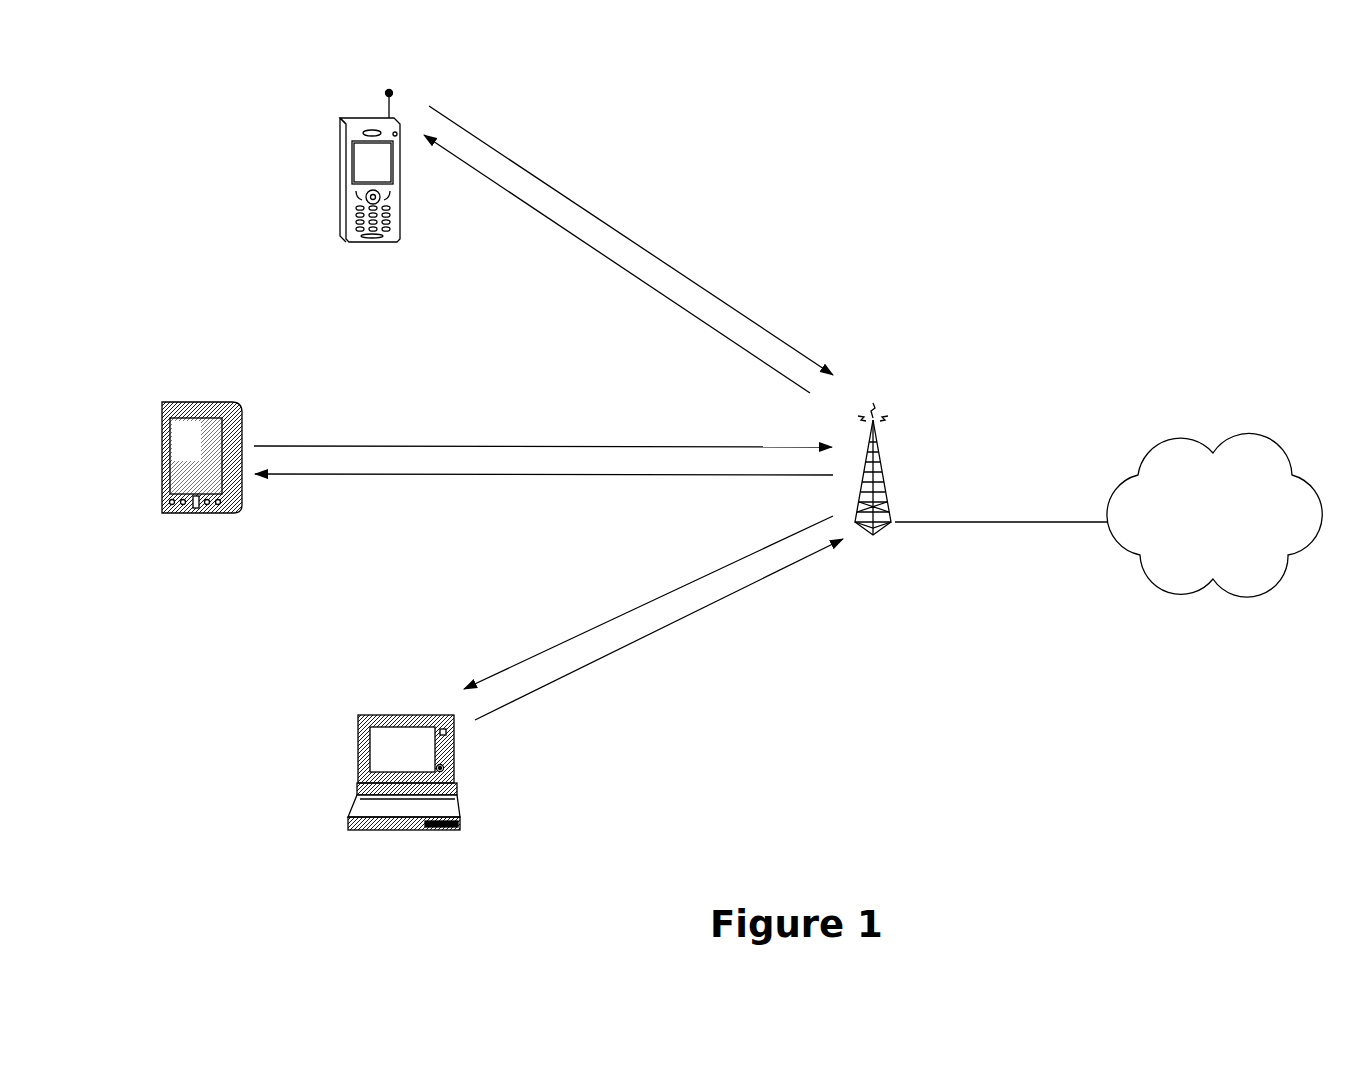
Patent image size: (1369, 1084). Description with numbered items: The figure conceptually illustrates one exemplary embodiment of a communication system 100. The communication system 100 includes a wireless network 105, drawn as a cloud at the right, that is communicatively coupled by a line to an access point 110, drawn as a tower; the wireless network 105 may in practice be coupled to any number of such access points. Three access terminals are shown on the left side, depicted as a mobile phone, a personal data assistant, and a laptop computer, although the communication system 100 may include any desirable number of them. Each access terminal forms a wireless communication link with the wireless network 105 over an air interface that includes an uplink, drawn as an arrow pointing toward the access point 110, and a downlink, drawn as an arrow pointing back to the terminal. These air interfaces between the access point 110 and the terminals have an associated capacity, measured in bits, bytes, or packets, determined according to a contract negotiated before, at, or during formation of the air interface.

The communication system 100 is at (1099, 173).
The wireless network 105 is at (1226, 537).
The access point 110 is at (887, 500).